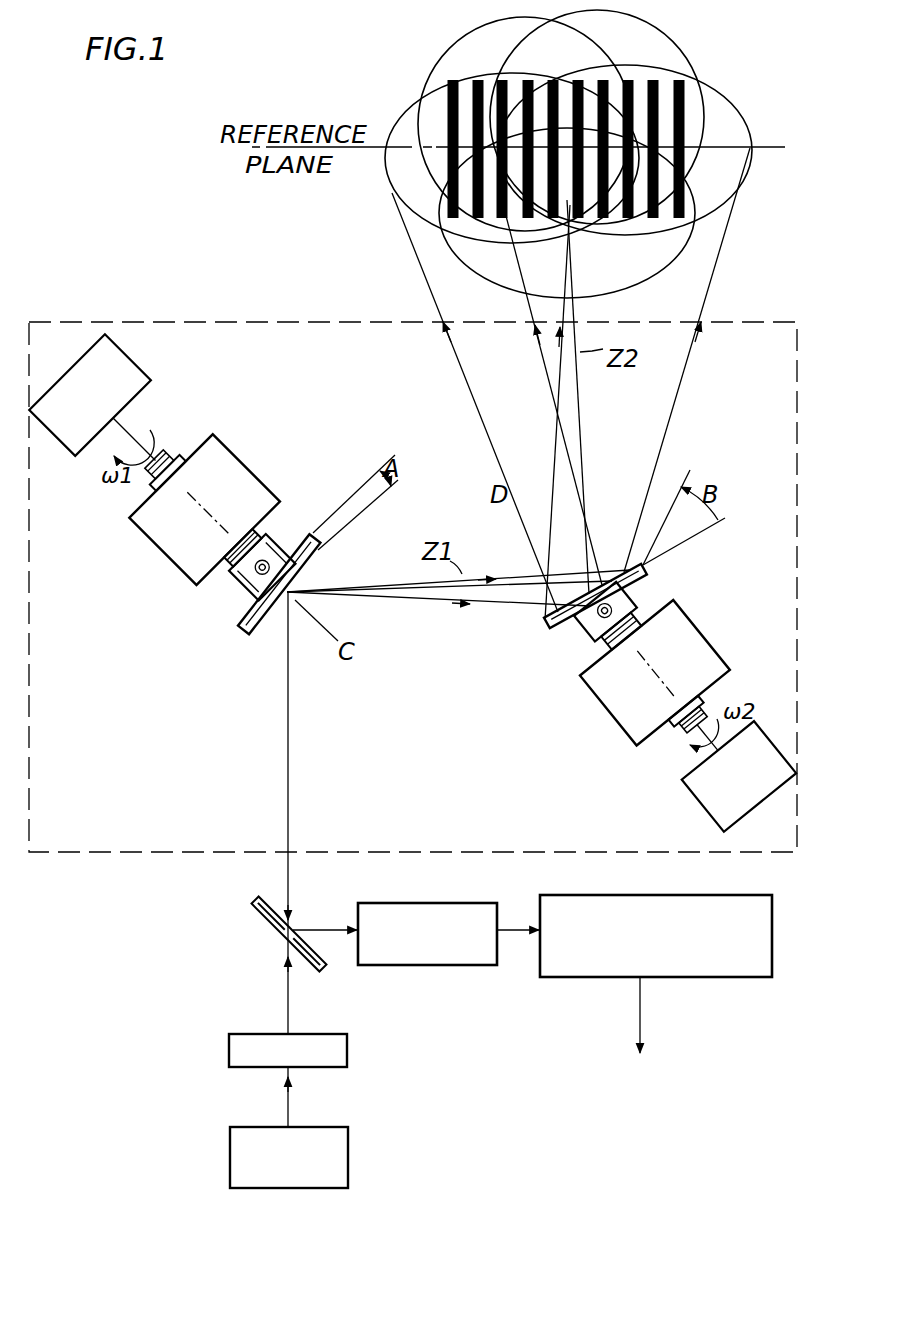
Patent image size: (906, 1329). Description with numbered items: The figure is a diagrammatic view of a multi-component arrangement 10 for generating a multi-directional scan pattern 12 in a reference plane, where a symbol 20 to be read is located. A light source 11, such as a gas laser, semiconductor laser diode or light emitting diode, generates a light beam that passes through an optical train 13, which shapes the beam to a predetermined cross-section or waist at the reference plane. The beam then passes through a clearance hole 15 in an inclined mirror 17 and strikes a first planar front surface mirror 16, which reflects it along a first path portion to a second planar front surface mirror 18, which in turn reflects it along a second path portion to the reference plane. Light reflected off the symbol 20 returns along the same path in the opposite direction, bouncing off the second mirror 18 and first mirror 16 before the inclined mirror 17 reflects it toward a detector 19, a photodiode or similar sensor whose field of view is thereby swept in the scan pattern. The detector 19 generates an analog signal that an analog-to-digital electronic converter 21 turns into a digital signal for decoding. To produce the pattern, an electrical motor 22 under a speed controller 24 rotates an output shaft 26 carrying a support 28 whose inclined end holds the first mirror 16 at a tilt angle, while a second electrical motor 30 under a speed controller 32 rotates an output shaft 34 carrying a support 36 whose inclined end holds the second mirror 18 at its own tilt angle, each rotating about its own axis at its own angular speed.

The multi-component arrangement 10 is at (200, 1015).
The light source 11 is at (343, 1143).
The multi-directional scan pattern 12 is at (728, 74).
The optical train 13 is at (344, 1052).
The clearance hole 15 is at (277, 927).
The first planar front surface mirror 16 is at (253, 615).
The inclined mirror 17 is at (258, 902).
The second planar front surface mirror 18 is at (647, 572).
The detector 19 is at (453, 958).
The symbol 20 is at (488, 219).
The analog-to-digital electronic converter 21 is at (713, 968).
The electrical motor 22 is at (233, 473).
The speed controller 24 is at (123, 352).
The output shaft 26 is at (158, 462).
The support 28 is at (281, 543).
The electrical motor 30 is at (695, 643).
The speed controller 32 is at (707, 812).
The output shaft 34 is at (693, 740).
The support 36 is at (577, 640).